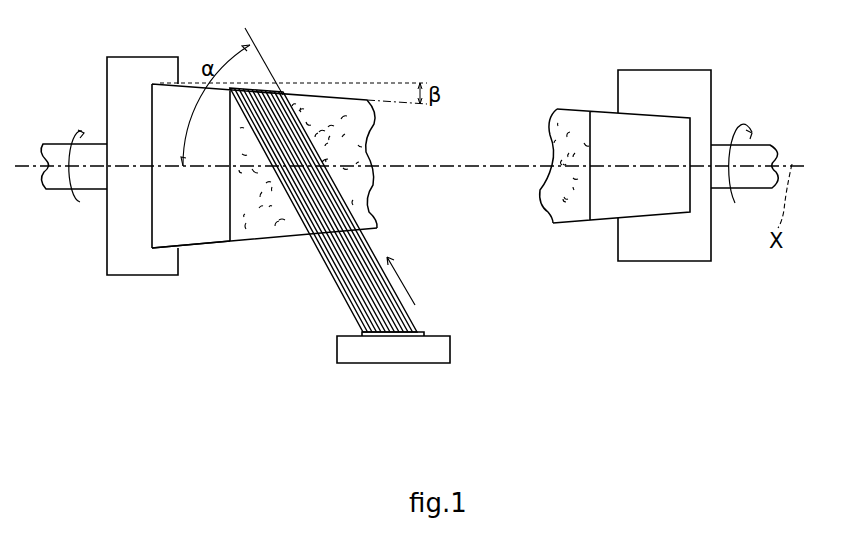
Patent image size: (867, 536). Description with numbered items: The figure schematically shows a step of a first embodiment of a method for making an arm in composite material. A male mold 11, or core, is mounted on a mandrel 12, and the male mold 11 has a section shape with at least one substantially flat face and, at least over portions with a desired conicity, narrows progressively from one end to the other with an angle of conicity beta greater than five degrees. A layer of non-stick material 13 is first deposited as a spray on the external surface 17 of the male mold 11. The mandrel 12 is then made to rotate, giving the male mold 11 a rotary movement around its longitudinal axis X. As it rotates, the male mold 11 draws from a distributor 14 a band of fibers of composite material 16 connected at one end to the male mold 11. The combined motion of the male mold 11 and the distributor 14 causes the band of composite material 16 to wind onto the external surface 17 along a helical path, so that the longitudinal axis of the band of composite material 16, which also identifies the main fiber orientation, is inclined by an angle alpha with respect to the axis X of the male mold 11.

The male mold 11 is at (195, 222).
The mandrel 12 is at (131, 78).
The layer of non-stick material 13 is at (328, 118).
The distributor 14 is at (440, 346).
The band of fibers of composite material 16 is at (355, 278).
The external surface 17 is at (213, 243).